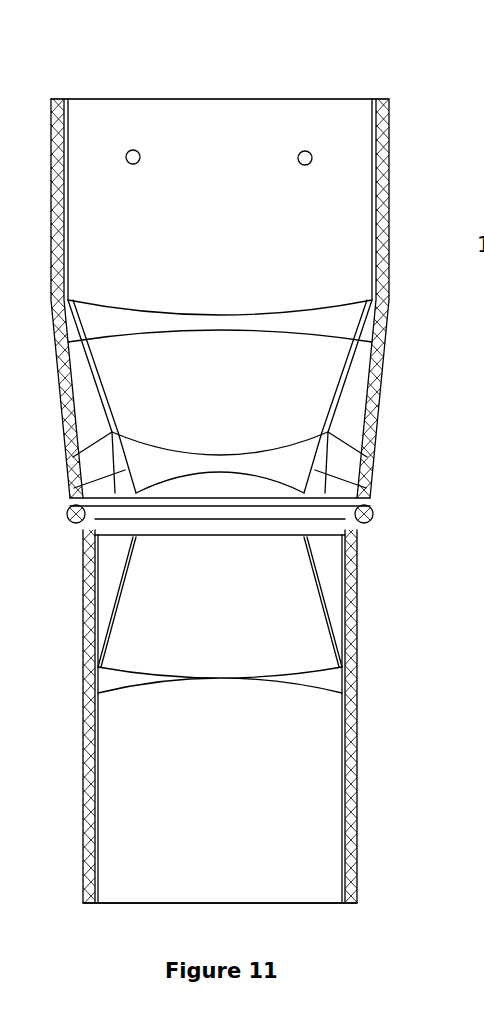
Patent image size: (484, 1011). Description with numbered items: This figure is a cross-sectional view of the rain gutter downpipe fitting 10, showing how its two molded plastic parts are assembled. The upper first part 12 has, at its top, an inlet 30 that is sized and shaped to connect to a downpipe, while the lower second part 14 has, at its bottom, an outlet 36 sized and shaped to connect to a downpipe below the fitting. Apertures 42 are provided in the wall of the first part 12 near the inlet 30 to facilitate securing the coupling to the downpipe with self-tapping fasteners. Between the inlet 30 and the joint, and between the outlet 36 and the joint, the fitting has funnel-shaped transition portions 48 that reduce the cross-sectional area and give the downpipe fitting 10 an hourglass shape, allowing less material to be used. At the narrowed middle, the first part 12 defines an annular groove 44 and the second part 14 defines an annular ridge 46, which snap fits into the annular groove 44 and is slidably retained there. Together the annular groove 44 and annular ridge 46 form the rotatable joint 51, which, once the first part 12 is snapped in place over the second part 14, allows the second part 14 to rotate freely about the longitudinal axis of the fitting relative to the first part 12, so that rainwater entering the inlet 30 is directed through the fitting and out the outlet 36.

The downpipe fitting 10 is at (320, 56).
The inlet 30 is at (147, 99).
The first part 12 is at (386, 343).
The apertures 42 is at (139, 161).
The transition portions 48 is at (365, 427).
The rotatable joint 51 is at (372, 500).
The annular groove 44 is at (66, 516).
The annular ridge 46 is at (85, 507).
The second part 14 is at (352, 743).
The outlet 36 is at (138, 905).